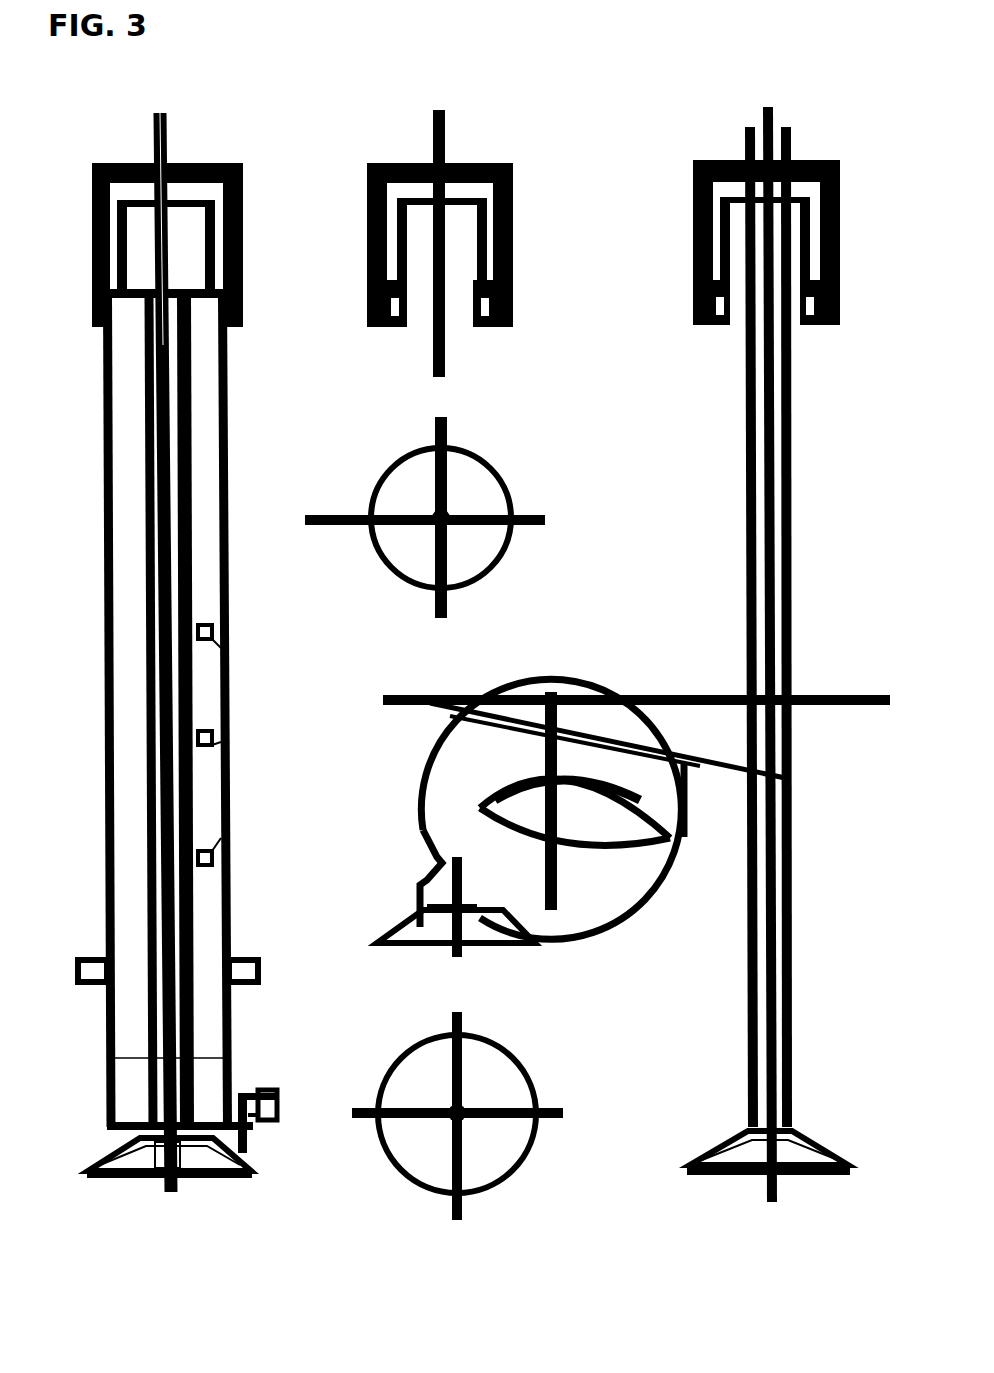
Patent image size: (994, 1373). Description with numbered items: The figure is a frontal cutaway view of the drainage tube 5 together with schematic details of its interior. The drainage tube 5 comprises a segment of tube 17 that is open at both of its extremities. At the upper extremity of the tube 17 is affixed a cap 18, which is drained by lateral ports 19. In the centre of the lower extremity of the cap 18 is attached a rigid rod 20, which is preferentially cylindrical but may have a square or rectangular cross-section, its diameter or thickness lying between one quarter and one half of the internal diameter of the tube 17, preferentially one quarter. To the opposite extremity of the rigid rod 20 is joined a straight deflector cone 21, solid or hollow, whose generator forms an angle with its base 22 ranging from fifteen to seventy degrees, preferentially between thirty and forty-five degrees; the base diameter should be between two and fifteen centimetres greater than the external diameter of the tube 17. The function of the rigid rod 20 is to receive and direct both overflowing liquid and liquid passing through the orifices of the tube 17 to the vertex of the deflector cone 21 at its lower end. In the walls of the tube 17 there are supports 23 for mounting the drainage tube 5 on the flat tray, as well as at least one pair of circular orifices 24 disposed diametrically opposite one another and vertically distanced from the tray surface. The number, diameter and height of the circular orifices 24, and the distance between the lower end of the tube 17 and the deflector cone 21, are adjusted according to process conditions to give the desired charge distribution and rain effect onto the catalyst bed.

The drainage tube 5 is at (465, 679).
The segment of tube 17 is at (198, 460).
The cap 18 is at (500, 226).
The lateral ports 19 is at (450, 245).
The rigid rod 20 is at (773, 437).
The deflector cone 21 is at (218, 1190).
The base 22 is at (128, 1180).
The supports 23 is at (240, 955).
The circular orifices 24 is at (228, 660).